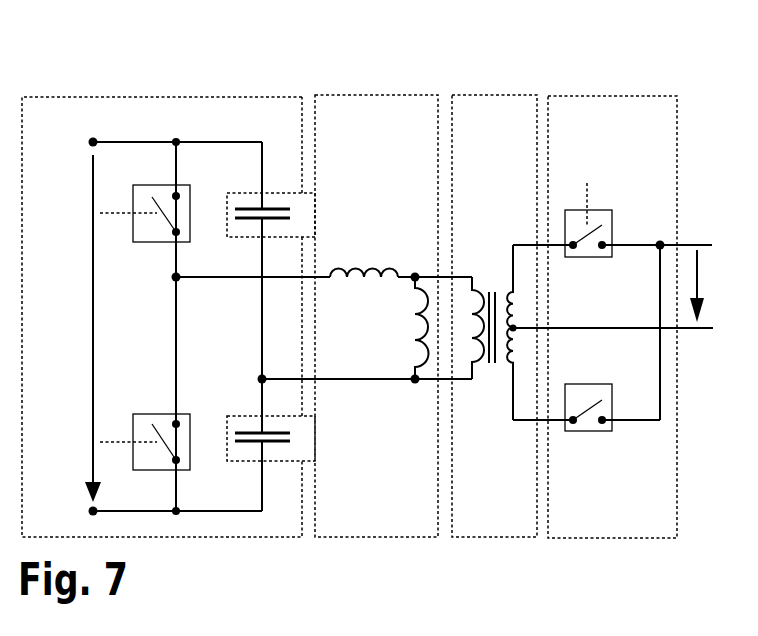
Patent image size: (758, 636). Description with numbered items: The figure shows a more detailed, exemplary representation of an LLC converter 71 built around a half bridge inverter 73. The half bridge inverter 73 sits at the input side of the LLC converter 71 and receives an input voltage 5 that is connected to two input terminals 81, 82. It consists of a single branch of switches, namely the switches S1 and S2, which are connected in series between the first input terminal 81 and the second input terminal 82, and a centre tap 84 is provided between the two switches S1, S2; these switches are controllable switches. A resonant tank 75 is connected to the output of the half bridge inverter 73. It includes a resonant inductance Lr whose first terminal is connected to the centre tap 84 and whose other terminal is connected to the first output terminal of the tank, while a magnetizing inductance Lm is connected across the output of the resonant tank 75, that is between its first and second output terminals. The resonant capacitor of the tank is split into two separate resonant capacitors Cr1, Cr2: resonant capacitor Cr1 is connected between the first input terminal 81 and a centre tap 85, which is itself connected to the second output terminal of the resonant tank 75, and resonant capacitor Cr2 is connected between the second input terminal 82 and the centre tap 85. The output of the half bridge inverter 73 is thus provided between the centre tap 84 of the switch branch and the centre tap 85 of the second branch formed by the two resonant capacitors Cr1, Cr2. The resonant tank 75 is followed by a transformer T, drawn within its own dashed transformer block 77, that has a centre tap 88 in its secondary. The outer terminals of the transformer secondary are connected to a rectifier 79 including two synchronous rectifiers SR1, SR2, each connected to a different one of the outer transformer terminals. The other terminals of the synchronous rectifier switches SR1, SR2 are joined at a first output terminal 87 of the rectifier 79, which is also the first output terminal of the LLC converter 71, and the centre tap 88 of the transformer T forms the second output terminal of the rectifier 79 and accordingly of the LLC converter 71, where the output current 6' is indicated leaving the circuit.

The LLC converter 71 is at (116, 87).
The half bridge inverter 73 is at (218, 317).
The resonant tank 75 is at (393, 316).
The transformer circuit 77 is at (582, 316).
The rectifier 79 is at (629, 317).
The first input terminal 81 is at (90, 142).
The second input terminal 82 is at (89, 511).
The centre tap 84 is at (174, 279).
The centre tap 85 is at (259, 376).
The first output terminal 87 is at (664, 243).
The centre tap 88 is at (516, 326).
The input voltage 5 is at (91, 282).
The output current 6' is at (718, 286).
The switch S1 is at (150, 185).
The switch S2 is at (150, 414).
The resonant capacitor Cr1 is at (253, 206).
The resonant capacitor Cr2 is at (253, 431).
The resonant inductance Lr is at (367, 267).
The magnetizing inductance Lm is at (418, 322).
The transformer T is at (487, 272).
The synchronous rectifier SR1 is at (600, 210).
The synchronous rectifier SR2 is at (600, 384).